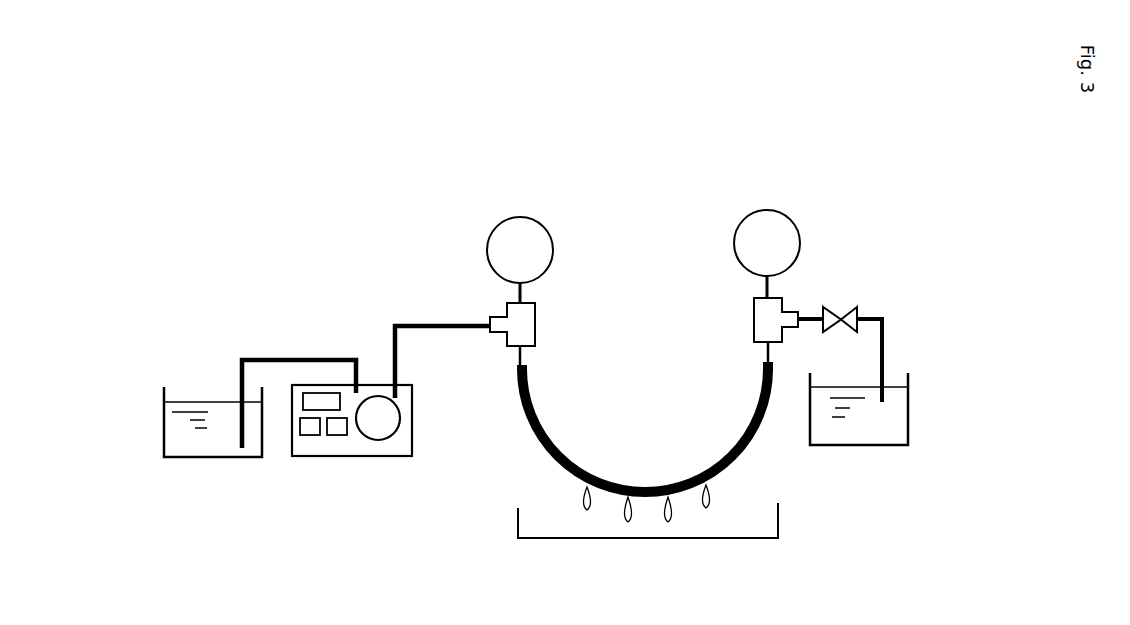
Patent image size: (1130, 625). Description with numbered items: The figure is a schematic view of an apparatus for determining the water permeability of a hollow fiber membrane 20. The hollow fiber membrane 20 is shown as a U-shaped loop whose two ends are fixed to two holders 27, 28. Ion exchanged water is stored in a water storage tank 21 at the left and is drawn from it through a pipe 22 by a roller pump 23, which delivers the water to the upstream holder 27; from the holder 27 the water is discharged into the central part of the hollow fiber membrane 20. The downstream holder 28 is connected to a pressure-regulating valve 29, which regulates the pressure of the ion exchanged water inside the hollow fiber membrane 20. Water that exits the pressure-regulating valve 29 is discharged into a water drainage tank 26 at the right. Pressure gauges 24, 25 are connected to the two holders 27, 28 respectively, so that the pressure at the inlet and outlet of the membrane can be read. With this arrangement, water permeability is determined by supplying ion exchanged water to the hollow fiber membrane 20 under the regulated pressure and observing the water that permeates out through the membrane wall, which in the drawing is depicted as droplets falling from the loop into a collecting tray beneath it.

The hollow fiber membrane 20 is at (537, 438).
The water storage tank 21 is at (164, 437).
The pipe 22 is at (394, 355).
The roller pump 23 is at (330, 442).
The pressure gauge 24 is at (520, 216).
The pressure gauge 25 is at (767, 210).
The water drainage tank 26 is at (893, 420).
The holder 27 is at (527, 322).
The holder 28 is at (755, 322).
The pressure-regulating valve 29 is at (843, 305).